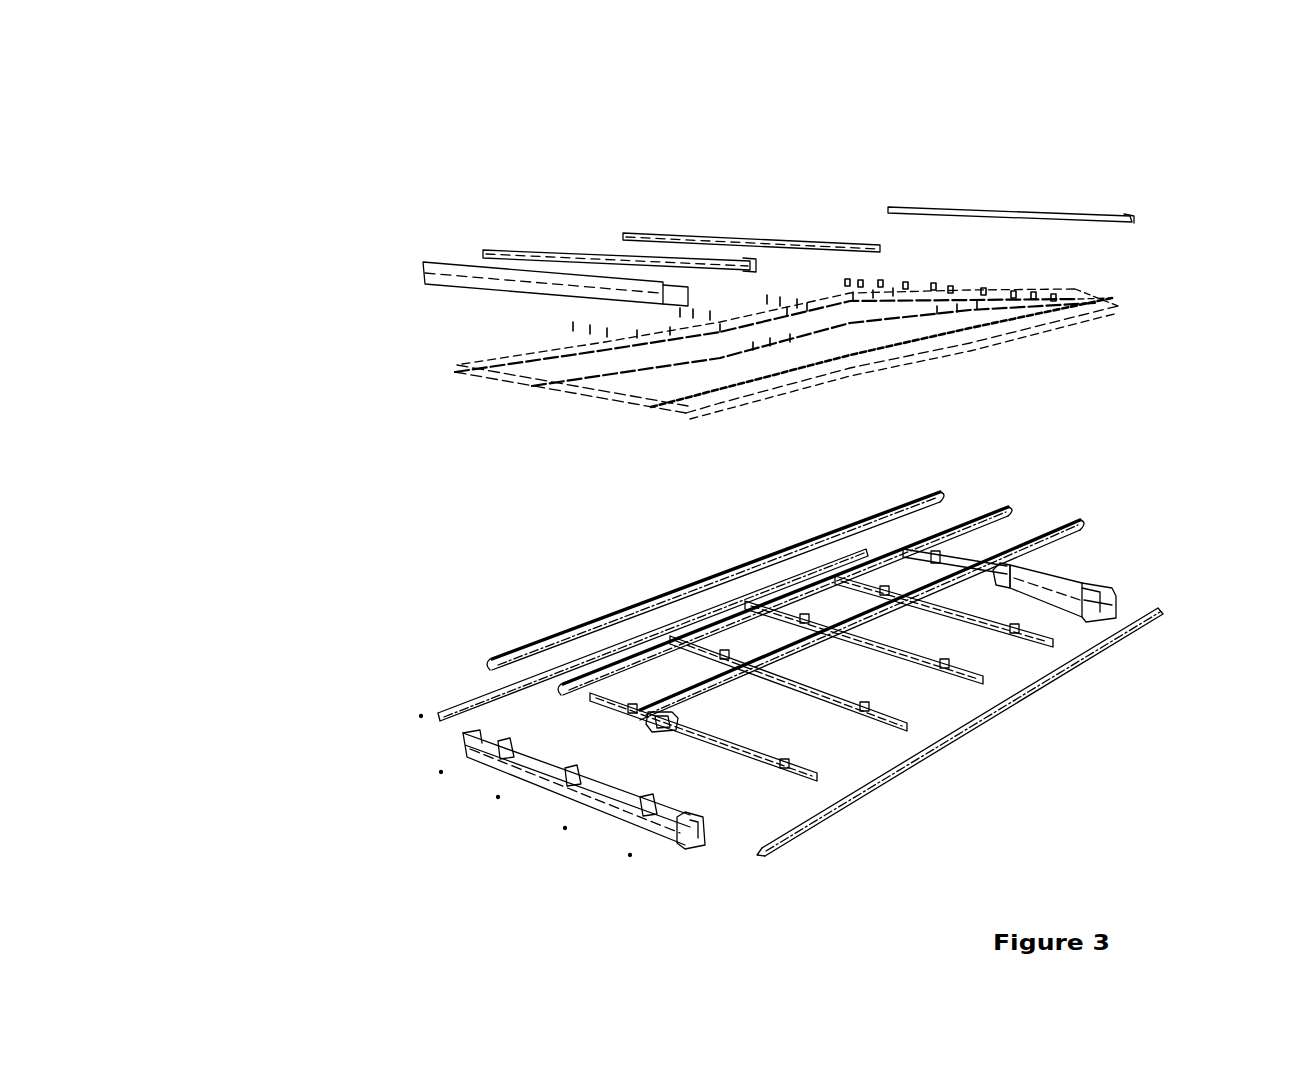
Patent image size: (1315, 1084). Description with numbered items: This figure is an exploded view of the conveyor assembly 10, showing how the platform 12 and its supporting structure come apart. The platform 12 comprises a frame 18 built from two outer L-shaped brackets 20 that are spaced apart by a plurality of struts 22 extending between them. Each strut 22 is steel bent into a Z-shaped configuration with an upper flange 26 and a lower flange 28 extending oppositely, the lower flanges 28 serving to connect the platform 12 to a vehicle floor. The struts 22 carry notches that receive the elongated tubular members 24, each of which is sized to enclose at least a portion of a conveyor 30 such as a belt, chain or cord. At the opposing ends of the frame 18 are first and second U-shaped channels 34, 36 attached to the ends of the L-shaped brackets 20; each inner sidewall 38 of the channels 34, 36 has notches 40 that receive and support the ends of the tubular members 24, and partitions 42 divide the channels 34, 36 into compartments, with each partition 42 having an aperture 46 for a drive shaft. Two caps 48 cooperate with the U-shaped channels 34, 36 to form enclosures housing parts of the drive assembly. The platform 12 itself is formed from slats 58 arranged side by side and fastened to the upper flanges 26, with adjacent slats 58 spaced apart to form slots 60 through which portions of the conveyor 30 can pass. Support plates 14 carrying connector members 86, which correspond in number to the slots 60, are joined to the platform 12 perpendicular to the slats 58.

The conveyor assembly 10 is at (276, 109).
The platform 12 is at (1064, 273).
The support plate 14 is at (573, 250).
The frame 18 is at (1104, 547).
The L-shaped bracket 20 is at (965, 735).
The strut 22 is at (1045, 640).
The elongated tubular member 24 is at (946, 486).
The upper flange 26 is at (810, 775).
The lower flange 28 is at (783, 758).
The conveyor 30 is at (625, 605).
The first U-shaped channel 34 is at (700, 842).
The second U-shaped channel 36 is at (1097, 612).
The inner sidewall 38 is at (607, 792).
The notch 40 is at (663, 810).
The partition 42 is at (590, 781).
The aperture 46 is at (653, 817).
The cap 48 is at (452, 266).
The slat 58 is at (542, 375).
The slot 60 is at (895, 344).
The connector member 86 is at (596, 257).